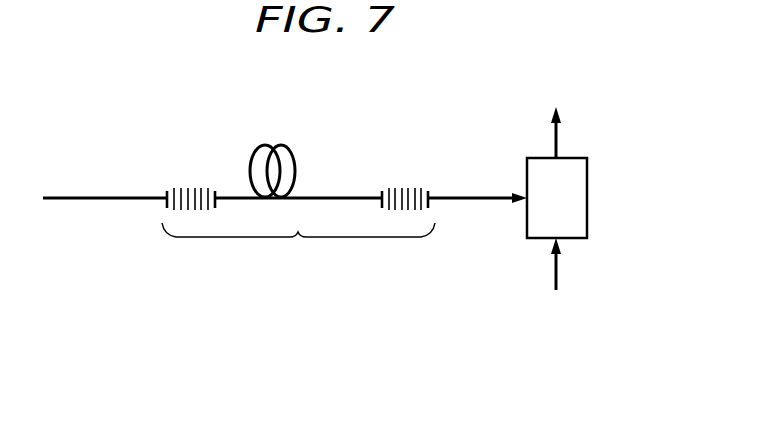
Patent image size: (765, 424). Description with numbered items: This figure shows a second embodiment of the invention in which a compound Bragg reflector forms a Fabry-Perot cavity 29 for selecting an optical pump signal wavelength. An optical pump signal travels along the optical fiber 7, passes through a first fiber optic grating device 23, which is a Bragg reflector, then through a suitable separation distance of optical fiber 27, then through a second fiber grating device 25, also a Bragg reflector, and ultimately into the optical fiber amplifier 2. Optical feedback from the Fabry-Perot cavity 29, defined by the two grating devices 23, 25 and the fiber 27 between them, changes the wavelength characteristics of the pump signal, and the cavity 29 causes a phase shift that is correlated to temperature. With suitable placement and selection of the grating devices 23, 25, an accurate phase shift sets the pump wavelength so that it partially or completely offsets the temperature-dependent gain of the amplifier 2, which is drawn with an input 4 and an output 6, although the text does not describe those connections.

The optical fiber 7 is at (118, 196).
The first fiber optic grating device 23 is at (195, 186).
The second fiber grating device 25 is at (406, 186).
The separation distance of optical fiber 27 is at (283, 143).
The Fabry-Perot cavity 29 is at (298, 247).
The optical fiber amplifier 2 is at (588, 198).
The output 6 is at (558, 140).
The input 4 is at (557, 272).